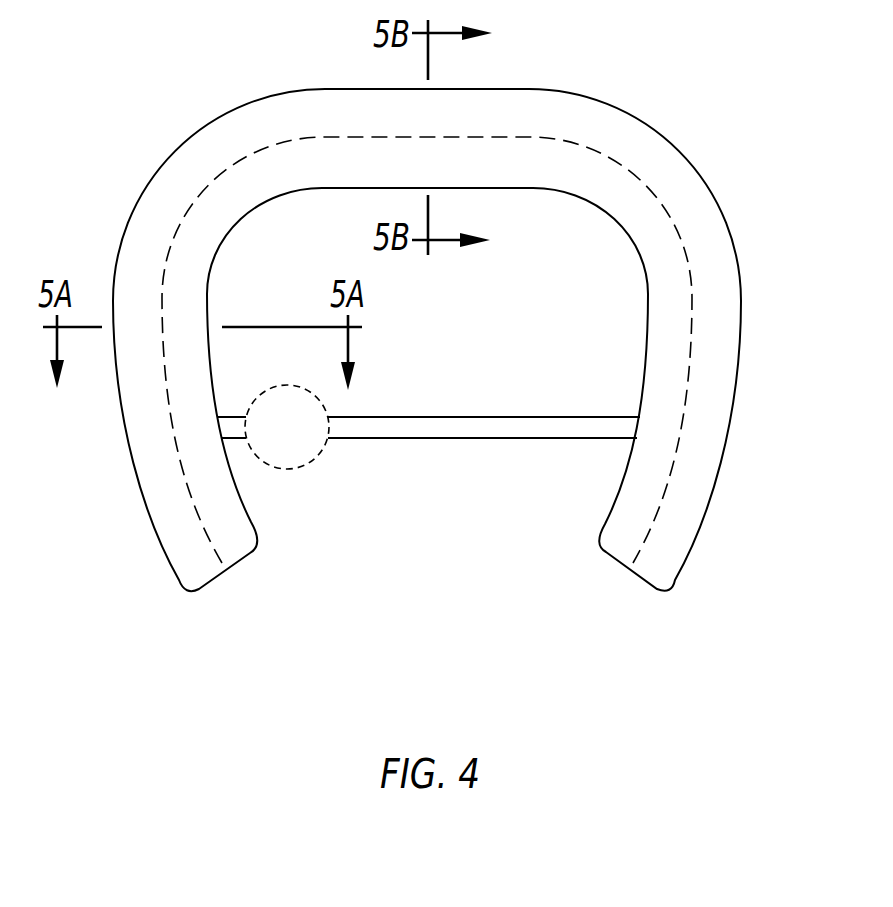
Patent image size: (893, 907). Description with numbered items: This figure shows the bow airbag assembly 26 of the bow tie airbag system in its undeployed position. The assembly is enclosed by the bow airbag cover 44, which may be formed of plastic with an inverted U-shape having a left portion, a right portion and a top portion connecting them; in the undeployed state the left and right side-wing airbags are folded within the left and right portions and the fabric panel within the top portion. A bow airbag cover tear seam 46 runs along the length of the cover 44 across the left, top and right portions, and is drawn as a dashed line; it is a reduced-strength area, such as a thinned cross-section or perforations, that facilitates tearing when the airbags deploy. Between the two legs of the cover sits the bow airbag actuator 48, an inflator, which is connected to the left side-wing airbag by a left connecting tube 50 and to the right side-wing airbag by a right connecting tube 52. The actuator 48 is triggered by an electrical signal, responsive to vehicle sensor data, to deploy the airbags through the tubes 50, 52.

The bow airbag assembly 26 is at (184, 82).
The bow airbag cover 44 is at (714, 190).
The bow airbag cover tear seam 46 is at (600, 157).
The bow airbag actuator 48 is at (292, 470).
The left connecting tube 50 is at (228, 417).
The right connecting tube 52 is at (632, 417).